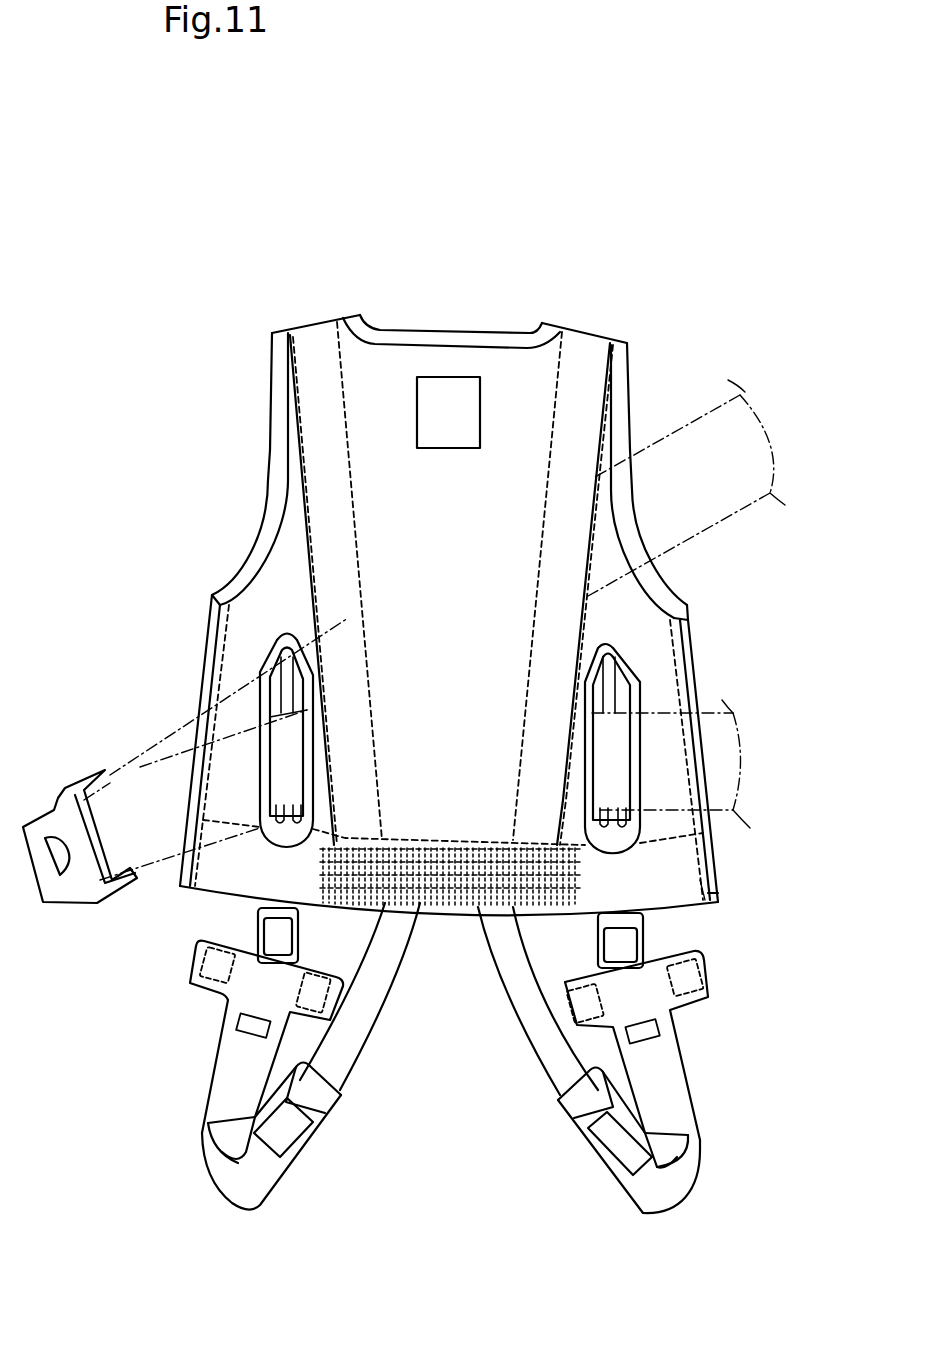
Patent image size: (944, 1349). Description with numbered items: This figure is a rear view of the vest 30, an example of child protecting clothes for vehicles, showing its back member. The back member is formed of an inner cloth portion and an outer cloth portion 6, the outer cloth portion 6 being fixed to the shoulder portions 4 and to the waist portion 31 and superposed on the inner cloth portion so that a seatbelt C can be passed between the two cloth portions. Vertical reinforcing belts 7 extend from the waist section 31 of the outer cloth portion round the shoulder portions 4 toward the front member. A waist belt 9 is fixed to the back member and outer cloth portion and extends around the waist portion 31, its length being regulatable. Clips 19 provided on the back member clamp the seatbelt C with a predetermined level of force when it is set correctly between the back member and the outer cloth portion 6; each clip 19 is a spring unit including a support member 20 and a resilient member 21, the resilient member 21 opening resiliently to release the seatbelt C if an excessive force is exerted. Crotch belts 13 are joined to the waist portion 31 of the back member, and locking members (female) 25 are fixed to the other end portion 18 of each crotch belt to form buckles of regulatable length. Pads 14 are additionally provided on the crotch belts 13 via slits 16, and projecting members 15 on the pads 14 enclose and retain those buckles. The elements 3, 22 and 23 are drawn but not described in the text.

The vest 30 is at (493, 303).
The shoulder portions 4 is at (290, 330).
The armhole binding 3 is at (267, 598).
The outer cloth portion 6 is at (370, 477).
The vertical reinforcing belts 7 is at (343, 522).
The clips 19 is at (245, 672).
The waist belt 9 is at (683, 875).
The support member 20 is at (608, 665).
The resilient member 21 is at (585, 767).
The waist belt end 22 is at (722, 752).
The seatbelt C is at (740, 440).
The chest belt buckle 23 is at (62, 905).
The waist portion 31 is at (440, 828).
The other end portion 18 is at (267, 910).
The locking member (female) 25 is at (298, 947).
The crotch belts 13 is at (520, 1007).
The projecting members 15 is at (192, 983).
The slits 16 is at (243, 1040).
The pads 14 is at (215, 1110).